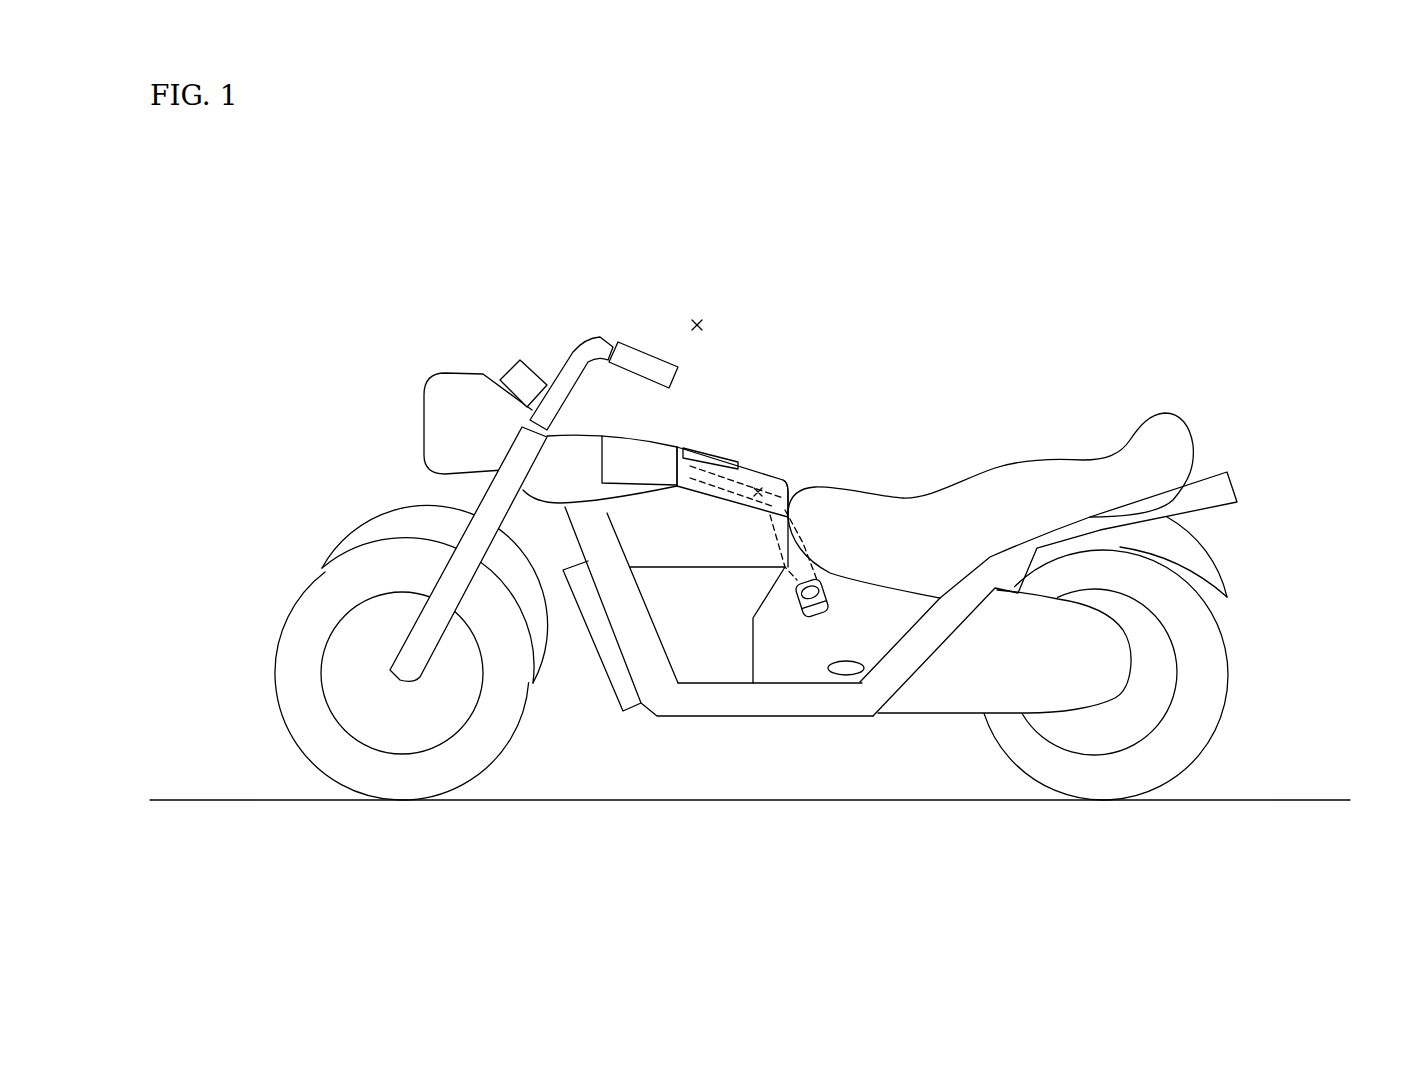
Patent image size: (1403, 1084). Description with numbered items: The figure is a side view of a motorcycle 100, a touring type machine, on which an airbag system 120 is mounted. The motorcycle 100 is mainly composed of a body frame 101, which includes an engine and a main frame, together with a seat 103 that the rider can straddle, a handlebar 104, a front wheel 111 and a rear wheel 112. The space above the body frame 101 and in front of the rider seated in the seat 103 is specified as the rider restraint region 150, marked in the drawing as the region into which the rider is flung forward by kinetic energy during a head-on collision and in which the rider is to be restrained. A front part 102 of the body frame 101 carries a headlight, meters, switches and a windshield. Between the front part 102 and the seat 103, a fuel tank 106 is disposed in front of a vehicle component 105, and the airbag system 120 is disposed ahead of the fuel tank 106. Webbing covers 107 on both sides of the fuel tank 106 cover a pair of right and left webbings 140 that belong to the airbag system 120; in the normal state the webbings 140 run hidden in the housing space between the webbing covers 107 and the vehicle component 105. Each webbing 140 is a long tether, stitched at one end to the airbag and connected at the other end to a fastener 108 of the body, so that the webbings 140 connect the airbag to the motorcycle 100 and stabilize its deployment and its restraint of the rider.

The motorcycle 100 is at (922, 270).
The body frame 101 is at (695, 718).
The front part 102 is at (497, 358).
The seat 103 is at (1070, 472).
The handlebar 104 is at (630, 341).
The vehicle component 105 is at (748, 466).
The fuel tank 106 is at (713, 447).
The webbing cover 107 is at (787, 480).
The fastener 108 is at (832, 582).
The front wheel 111 is at (397, 780).
The rear wheel 112 is at (1093, 778).
The airbag system 120 is at (658, 440).
The webbing 140 is at (758, 492).
The rider restraint region 150 is at (697, 315).